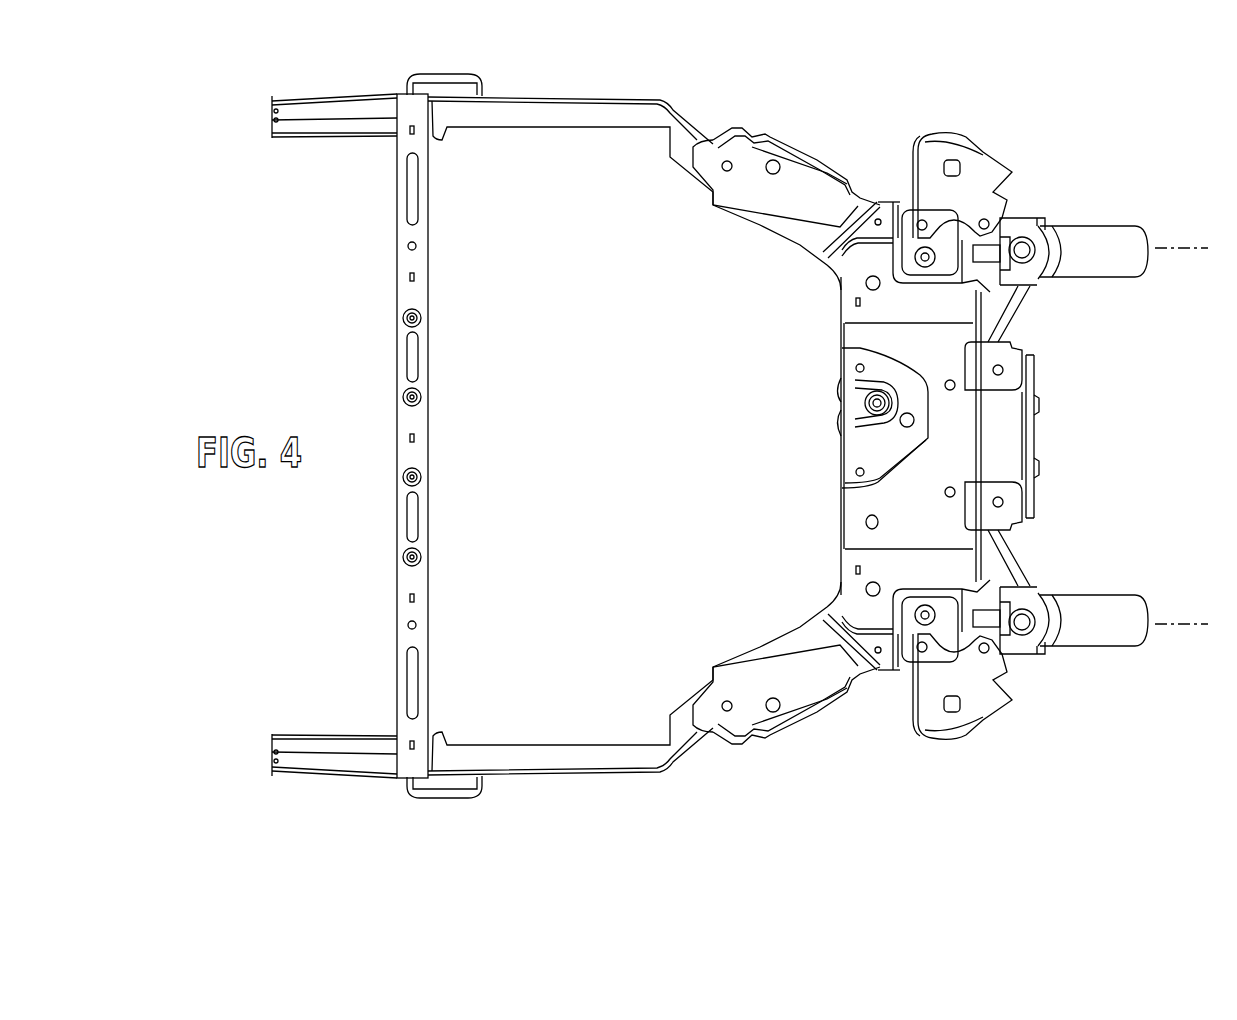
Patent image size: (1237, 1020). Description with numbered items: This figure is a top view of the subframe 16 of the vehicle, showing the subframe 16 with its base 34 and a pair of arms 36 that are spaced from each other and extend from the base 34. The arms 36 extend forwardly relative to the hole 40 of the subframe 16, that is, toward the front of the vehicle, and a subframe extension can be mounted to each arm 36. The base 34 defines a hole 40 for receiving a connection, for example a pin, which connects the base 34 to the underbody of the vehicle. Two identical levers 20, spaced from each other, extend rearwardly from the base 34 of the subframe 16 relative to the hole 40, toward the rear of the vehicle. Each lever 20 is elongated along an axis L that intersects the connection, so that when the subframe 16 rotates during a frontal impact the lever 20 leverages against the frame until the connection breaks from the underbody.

The subframe 16 is at (869, 106).
The lever 20 is at (1104, 238).
The base 34 is at (860, 501).
The arm 36 is at (587, 84).
The hole 40 is at (1002, 217).